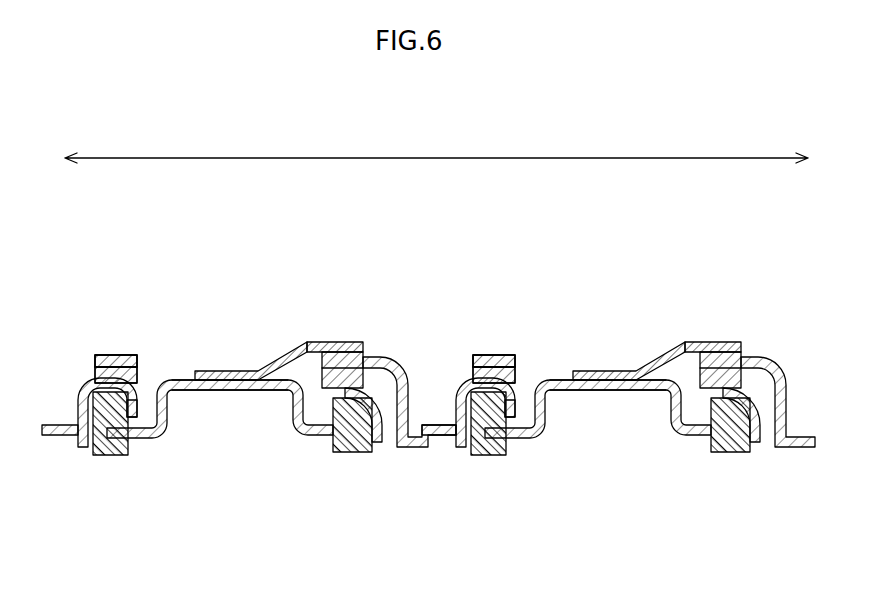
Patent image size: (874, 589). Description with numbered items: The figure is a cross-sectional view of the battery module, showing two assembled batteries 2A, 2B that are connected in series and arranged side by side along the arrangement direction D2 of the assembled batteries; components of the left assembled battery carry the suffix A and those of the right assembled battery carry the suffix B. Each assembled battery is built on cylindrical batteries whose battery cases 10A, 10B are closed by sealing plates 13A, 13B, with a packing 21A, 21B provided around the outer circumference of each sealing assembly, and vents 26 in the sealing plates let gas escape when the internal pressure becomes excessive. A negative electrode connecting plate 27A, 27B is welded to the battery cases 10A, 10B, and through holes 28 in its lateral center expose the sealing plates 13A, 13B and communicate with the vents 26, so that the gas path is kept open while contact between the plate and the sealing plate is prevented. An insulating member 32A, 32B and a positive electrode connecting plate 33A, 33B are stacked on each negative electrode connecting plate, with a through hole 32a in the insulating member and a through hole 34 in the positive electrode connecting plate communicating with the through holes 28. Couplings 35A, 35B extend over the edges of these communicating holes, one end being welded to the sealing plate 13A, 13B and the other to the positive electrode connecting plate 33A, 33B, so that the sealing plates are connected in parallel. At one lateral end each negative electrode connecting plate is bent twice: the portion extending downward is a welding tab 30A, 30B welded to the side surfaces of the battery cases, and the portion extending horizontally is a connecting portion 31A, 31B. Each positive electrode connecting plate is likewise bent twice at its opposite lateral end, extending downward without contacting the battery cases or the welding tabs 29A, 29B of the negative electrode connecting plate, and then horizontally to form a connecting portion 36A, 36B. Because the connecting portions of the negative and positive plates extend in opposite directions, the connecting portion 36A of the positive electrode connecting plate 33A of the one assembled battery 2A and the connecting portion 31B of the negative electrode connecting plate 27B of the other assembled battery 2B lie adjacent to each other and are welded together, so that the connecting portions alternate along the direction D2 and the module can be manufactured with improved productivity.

The arrangement direction of the assembled batteries D2 is at (440, 158).
The assembled battery 2A is at (238, 252).
The assembled battery 2B is at (616, 252).
The battery case 10A is at (85, 425).
The battery case 10B is at (478, 423).
The sealing plate 13A is at (228, 390).
The sealing plate 13B is at (606, 390).
The packing 21A is at (118, 455).
The packing 21B is at (487, 452).
The vents 26 is at (170, 393).
The negative electrode connecting plate 27A is at (345, 352).
The negative electrode connecting plate 27B is at (723, 352).
The through holes 28 is at (163, 365).
The welding tabs 29A is at (370, 452).
The welding tabs 29B is at (748, 452).
The welding tab 30A is at (80, 412).
The welding tab 30B is at (458, 405).
The connecting portion 31A is at (57, 440).
The connecting portion 31B is at (440, 436).
The insulating member 32A is at (80, 368).
The insulating member 32B is at (460, 368).
The through hole 32a is at (140, 365).
The positive electrode connecting plate 33A is at (115, 355).
The positive electrode connecting plate 33B is at (493, 355).
The through hole 34 is at (145, 356).
The coupling 35A is at (237, 372).
The coupling 35B is at (615, 372).
The connecting portion 36A is at (420, 447).
The connecting portion 36B is at (805, 447).